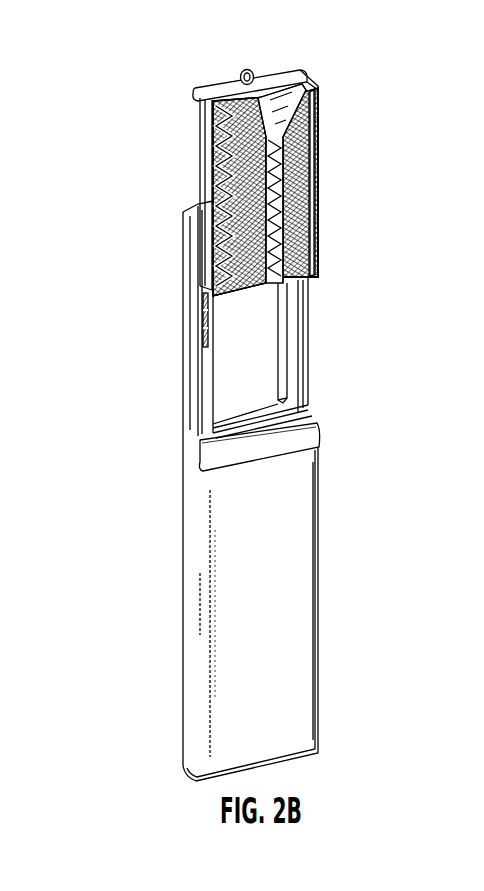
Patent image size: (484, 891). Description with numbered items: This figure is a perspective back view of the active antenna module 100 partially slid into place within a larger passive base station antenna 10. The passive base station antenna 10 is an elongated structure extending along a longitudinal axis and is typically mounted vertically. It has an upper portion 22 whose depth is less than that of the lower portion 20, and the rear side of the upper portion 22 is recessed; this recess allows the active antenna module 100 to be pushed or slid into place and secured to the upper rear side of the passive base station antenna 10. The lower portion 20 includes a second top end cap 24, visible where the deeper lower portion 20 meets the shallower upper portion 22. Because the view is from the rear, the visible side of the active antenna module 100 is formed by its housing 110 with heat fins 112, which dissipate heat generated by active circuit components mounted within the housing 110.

The passive base station antenna 10 is at (360, 437).
The lower portion 20 is at (128, 639).
The upper portion 22 is at (143, 352).
The second top end cap 24 is at (203, 462).
The active antenna module 100 is at (360, 103).
The housing 110 is at (200, 158).
The heat fins 112 is at (318, 236).